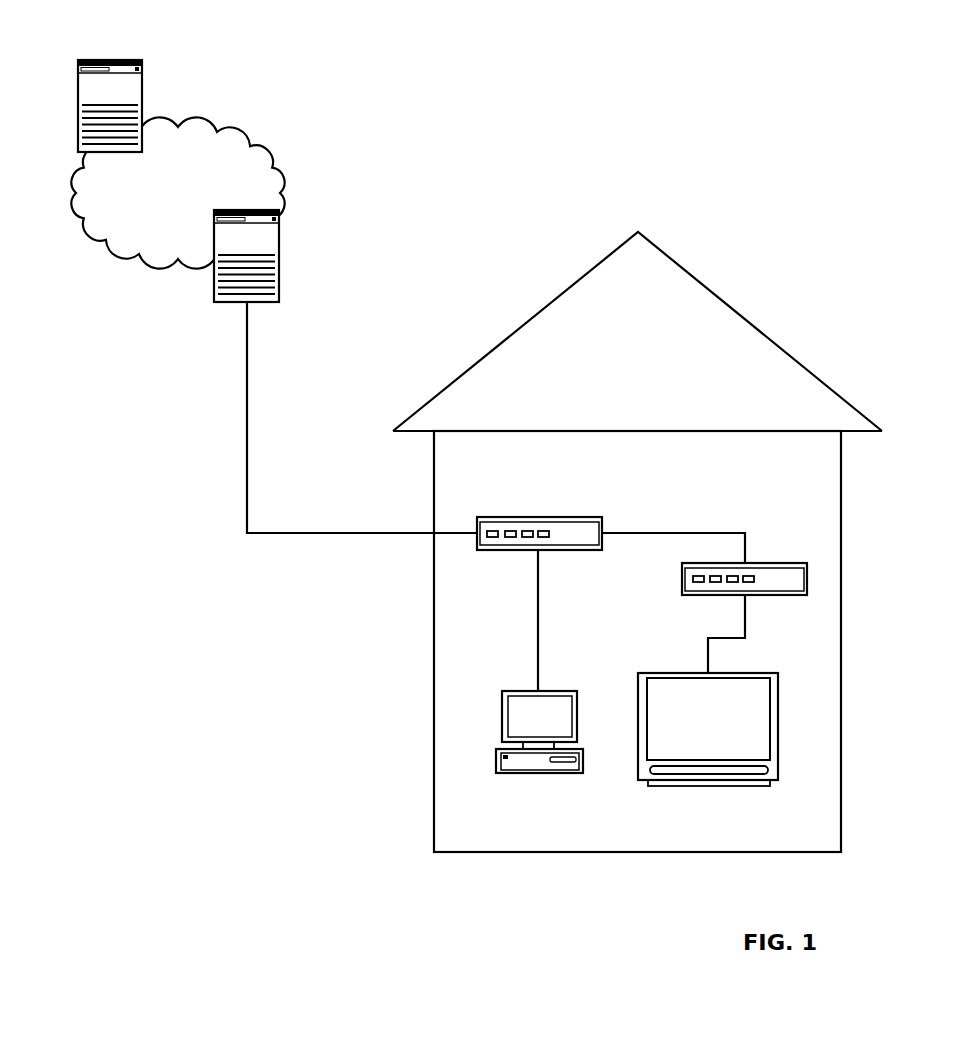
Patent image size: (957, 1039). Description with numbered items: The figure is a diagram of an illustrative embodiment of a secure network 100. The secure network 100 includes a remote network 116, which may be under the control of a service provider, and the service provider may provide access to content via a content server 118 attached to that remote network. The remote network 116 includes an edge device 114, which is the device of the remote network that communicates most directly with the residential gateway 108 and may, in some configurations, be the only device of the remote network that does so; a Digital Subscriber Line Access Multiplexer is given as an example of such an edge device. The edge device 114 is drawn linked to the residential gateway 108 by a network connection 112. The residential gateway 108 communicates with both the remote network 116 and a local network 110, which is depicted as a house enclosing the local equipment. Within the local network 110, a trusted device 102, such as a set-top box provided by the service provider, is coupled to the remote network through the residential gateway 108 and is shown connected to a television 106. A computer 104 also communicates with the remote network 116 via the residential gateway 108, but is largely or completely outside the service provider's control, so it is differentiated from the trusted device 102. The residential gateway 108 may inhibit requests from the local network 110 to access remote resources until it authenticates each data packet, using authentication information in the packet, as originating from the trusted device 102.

The secure network 100 is at (606, 88).
The trusted device 102 is at (797, 552).
The computer 104 is at (554, 828).
The television 106 is at (724, 746).
The residential gateway 108 is at (554, 508).
The local network 110 is at (421, 451).
The network connection 112 is at (267, 556).
The edge device 114 is at (199, 356).
The remote network 116 is at (194, 216).
The content server 118 is at (72, 86).